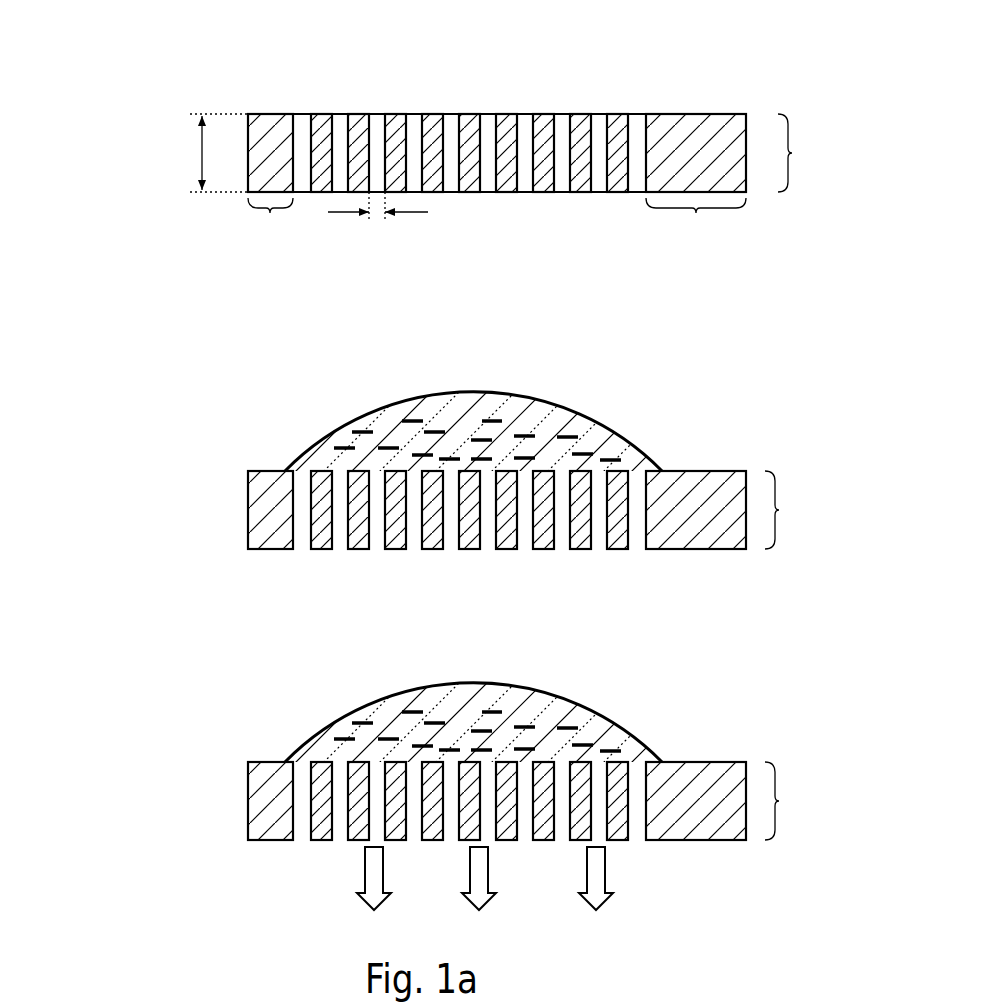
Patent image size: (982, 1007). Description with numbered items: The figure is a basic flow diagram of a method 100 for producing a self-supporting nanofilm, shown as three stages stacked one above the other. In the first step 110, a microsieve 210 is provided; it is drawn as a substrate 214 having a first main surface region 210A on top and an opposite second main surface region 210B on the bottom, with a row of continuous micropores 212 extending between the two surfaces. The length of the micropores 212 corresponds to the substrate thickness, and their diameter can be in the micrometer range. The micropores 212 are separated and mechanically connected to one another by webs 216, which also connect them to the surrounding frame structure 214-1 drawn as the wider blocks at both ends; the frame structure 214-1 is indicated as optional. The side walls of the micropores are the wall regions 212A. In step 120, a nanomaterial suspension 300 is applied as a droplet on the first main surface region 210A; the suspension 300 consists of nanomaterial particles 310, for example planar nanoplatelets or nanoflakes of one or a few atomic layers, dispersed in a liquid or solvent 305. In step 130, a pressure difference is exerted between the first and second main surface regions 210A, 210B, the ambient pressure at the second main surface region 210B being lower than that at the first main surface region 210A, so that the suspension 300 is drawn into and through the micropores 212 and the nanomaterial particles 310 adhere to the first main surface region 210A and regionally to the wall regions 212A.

The method for producing a nanofilm 100 is at (195, 33).
The step of providing a microsieve 110 is at (130, 164).
The step of applying nanomaterial suspension 120 is at (132, 522).
The step of exerting pressure difference 130 is at (132, 813).
The microsieve 210 is at (498, 164).
The first main surface region 210A is at (676, 112).
The second main surface region 210B is at (668, 195).
The micropores 212 is at (562, 112).
The wall regions of the micropores 212A is at (525, 194).
The substrate 214 is at (498, 153).
The frame structure 214-1 is at (483, 198).
The webs 216 is at (471, 112).
The nanomaterial suspension 300 is at (483, 401).
The liquid or solvent 305 is at (516, 410).
The nanomaterial particles 310 is at (590, 450).